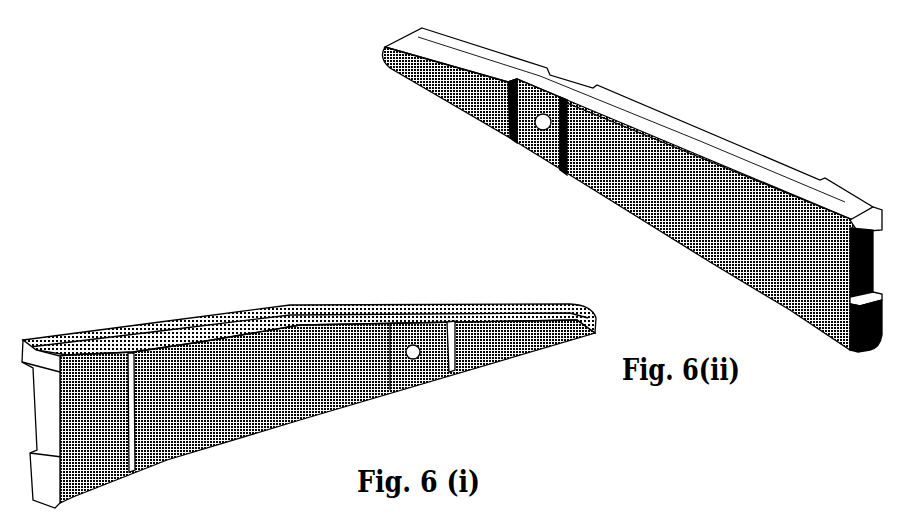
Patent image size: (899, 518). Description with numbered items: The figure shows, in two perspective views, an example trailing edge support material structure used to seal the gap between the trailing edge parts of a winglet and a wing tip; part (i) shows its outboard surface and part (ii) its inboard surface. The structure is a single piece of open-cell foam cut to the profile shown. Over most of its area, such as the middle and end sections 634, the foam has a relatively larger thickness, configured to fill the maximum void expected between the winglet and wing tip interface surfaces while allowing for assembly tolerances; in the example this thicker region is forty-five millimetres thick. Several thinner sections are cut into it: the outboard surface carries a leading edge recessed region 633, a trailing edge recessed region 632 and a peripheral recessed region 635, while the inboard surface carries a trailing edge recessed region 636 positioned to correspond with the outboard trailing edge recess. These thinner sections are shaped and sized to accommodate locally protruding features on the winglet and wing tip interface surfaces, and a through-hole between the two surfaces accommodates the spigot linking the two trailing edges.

The trailing edge recessed region 632 is at (407, 322).
The leading edge recessed region 633 is at (97, 410).
The middle and end sections 634 is at (213, 408).
The peripheral recessed region 635 is at (277, 322).
The trailing edge recessed region 636 is at (552, 143).